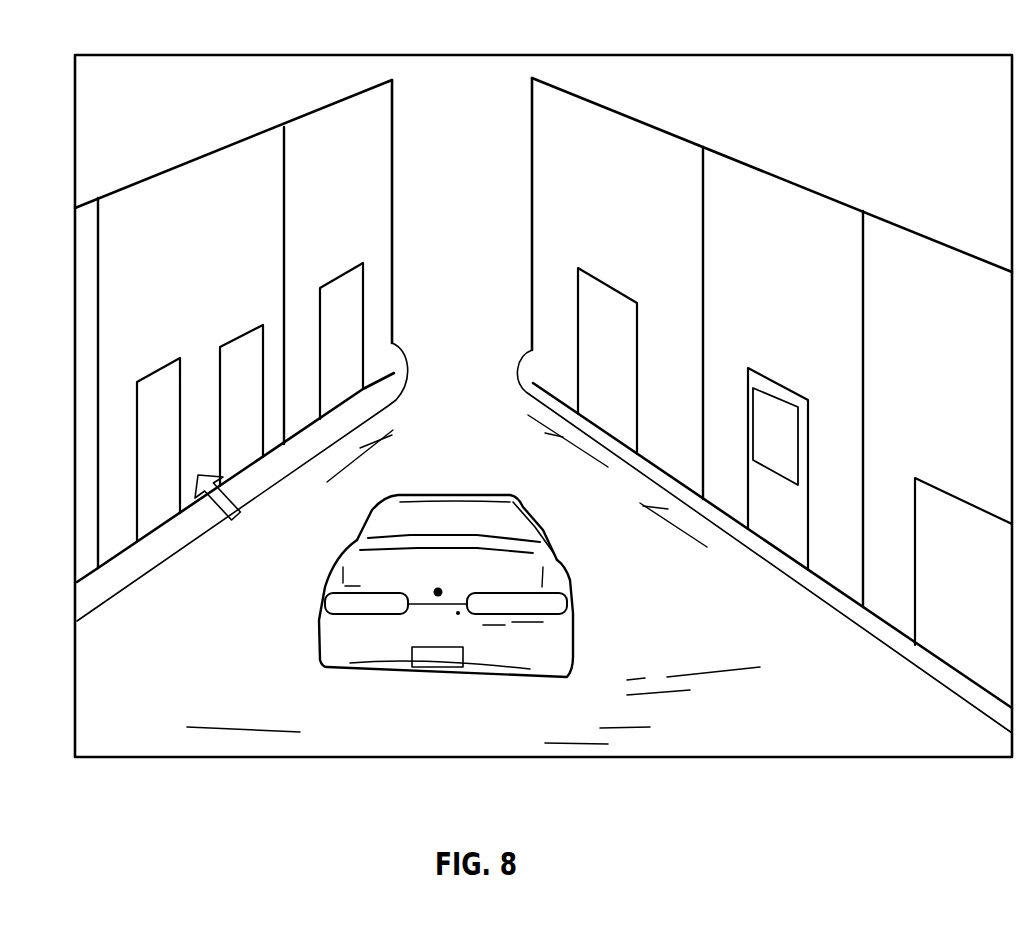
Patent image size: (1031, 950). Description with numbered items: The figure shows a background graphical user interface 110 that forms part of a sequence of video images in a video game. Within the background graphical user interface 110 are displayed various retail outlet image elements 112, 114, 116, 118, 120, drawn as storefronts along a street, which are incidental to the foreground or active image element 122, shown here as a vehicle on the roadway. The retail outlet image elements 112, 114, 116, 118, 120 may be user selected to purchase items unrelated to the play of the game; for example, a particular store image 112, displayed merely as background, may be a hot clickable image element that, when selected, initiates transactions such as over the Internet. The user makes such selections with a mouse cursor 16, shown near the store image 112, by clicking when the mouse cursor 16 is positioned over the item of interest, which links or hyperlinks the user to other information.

The background graphical user interface 110 is at (878, 53).
The store image 112 is at (207, 163).
The retail outlet image element 114 is at (887, 240).
The retail outlet image element 116 is at (308, 125).
The retail outlet image element 118 is at (652, 145).
The retail outlet image element 120 is at (768, 190).
The foreground active image element 122 is at (558, 565).
The mouse cursor 16 is at (236, 518).